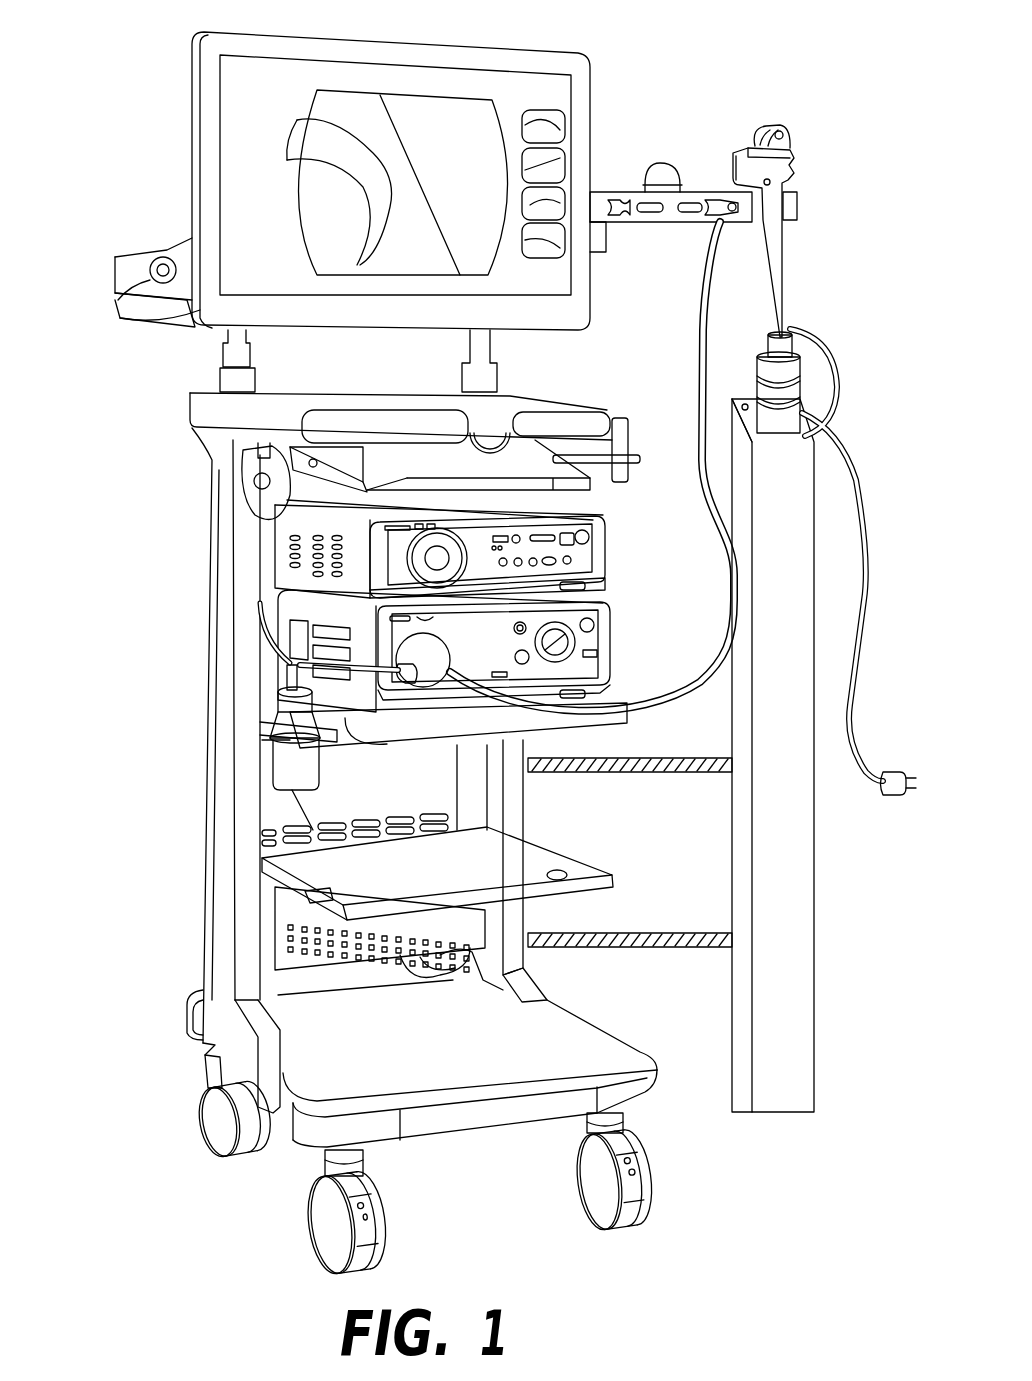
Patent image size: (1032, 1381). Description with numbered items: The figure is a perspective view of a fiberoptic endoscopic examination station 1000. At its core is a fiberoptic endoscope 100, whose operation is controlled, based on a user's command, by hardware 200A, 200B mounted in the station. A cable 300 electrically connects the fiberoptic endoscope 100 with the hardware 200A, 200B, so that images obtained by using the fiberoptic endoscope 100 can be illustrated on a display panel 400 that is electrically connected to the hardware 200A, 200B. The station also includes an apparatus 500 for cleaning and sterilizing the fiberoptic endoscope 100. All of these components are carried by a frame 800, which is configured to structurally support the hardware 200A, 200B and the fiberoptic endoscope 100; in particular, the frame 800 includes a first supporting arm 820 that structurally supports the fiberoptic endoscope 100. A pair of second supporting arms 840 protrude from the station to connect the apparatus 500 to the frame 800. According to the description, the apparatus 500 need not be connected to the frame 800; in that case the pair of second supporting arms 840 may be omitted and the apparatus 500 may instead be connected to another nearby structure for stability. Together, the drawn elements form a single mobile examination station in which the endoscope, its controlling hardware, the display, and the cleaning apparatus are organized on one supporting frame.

The fiberoptic endoscopic examination station 1000 is at (801, 28).
The display panel 400 is at (192, 80).
The first supporting arm 820 is at (632, 192).
The fiberoptic endoscope 100 is at (801, 158).
The cable 300 is at (702, 353).
The apparatus for cleaning and sterilizing the fiberoptic endoscope 500 is at (845, 400).
The hardware 200A is at (293, 560).
The hardware 200B is at (295, 610).
The frame 800 is at (212, 772).
The pair of second supporting arms 840 is at (645, 933).